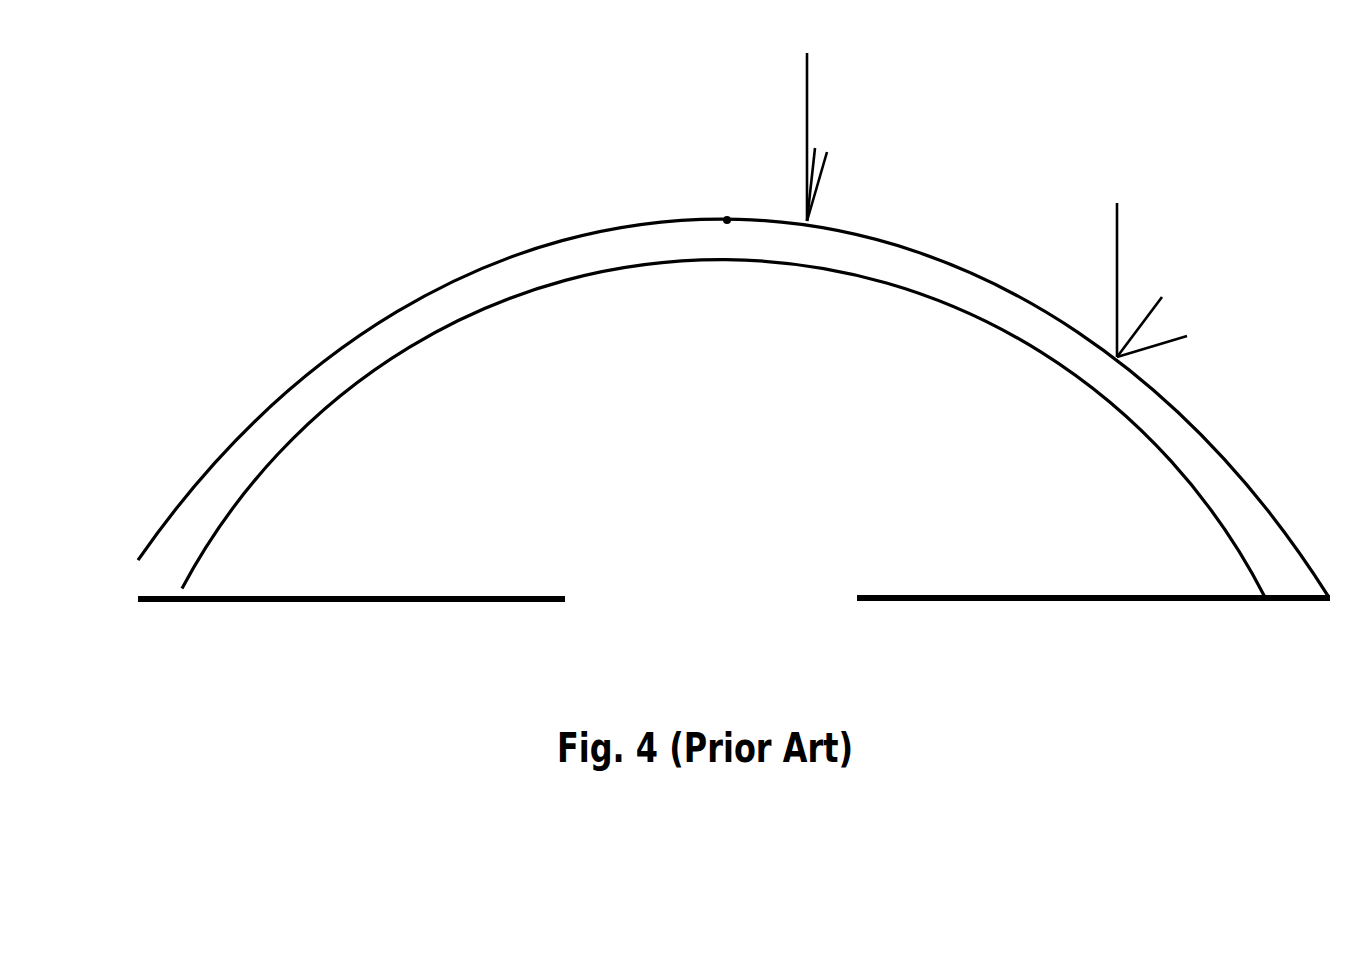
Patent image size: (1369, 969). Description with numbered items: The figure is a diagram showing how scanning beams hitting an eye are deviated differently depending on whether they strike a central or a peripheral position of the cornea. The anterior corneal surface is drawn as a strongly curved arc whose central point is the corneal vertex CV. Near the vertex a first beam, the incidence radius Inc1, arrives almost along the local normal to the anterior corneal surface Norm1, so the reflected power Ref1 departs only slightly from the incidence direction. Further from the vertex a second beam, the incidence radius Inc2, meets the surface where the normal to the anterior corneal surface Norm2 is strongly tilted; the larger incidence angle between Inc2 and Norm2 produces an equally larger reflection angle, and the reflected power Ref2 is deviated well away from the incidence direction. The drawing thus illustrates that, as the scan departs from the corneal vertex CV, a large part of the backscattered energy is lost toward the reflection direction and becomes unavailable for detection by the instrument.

The corneal vertex CV is at (733, 388).
The incidence radius Inc1 is at (827, 137).
The normal to the anterior corneal surface Norm1 is at (847, 169).
The reflected power Ref1 is at (845, 186).
The incidence radius Inc2 is at (1120, 264).
The normal to the anterior corneal surface Norm2 is at (1169, 310).
The reflected power Ref2 is at (1184, 339).